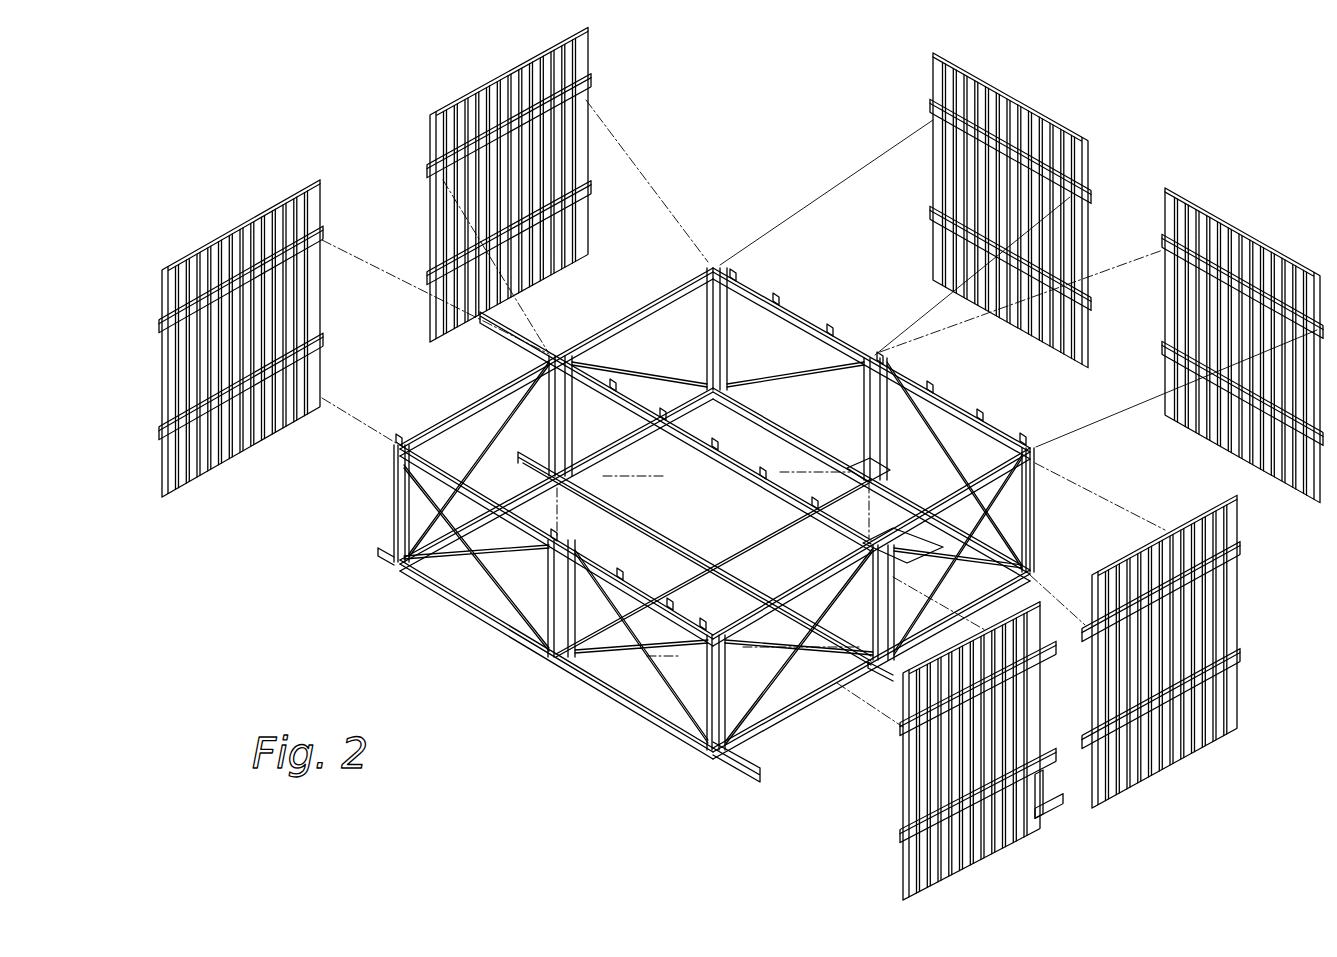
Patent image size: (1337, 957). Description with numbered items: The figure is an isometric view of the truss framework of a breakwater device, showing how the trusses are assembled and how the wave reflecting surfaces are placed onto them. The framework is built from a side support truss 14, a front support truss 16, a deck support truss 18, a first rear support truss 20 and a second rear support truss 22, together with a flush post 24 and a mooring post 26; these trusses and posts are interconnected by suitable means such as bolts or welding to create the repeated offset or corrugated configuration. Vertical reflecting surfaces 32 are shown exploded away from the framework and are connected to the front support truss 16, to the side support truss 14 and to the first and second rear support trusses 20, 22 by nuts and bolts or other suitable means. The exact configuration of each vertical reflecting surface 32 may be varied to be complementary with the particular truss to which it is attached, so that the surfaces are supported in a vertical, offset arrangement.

The side support truss 14 is at (672, 287).
The front support truss 16 is at (995, 421).
The deck support truss 18 is at (700, 436).
The first rear support truss 20 is at (456, 601).
The second rear support truss 22 is at (638, 588).
The flush post 24 is at (552, 655).
The mooring post 26 is at (903, 545).
The vertical reflecting surfaces 32 is at (268, 212).